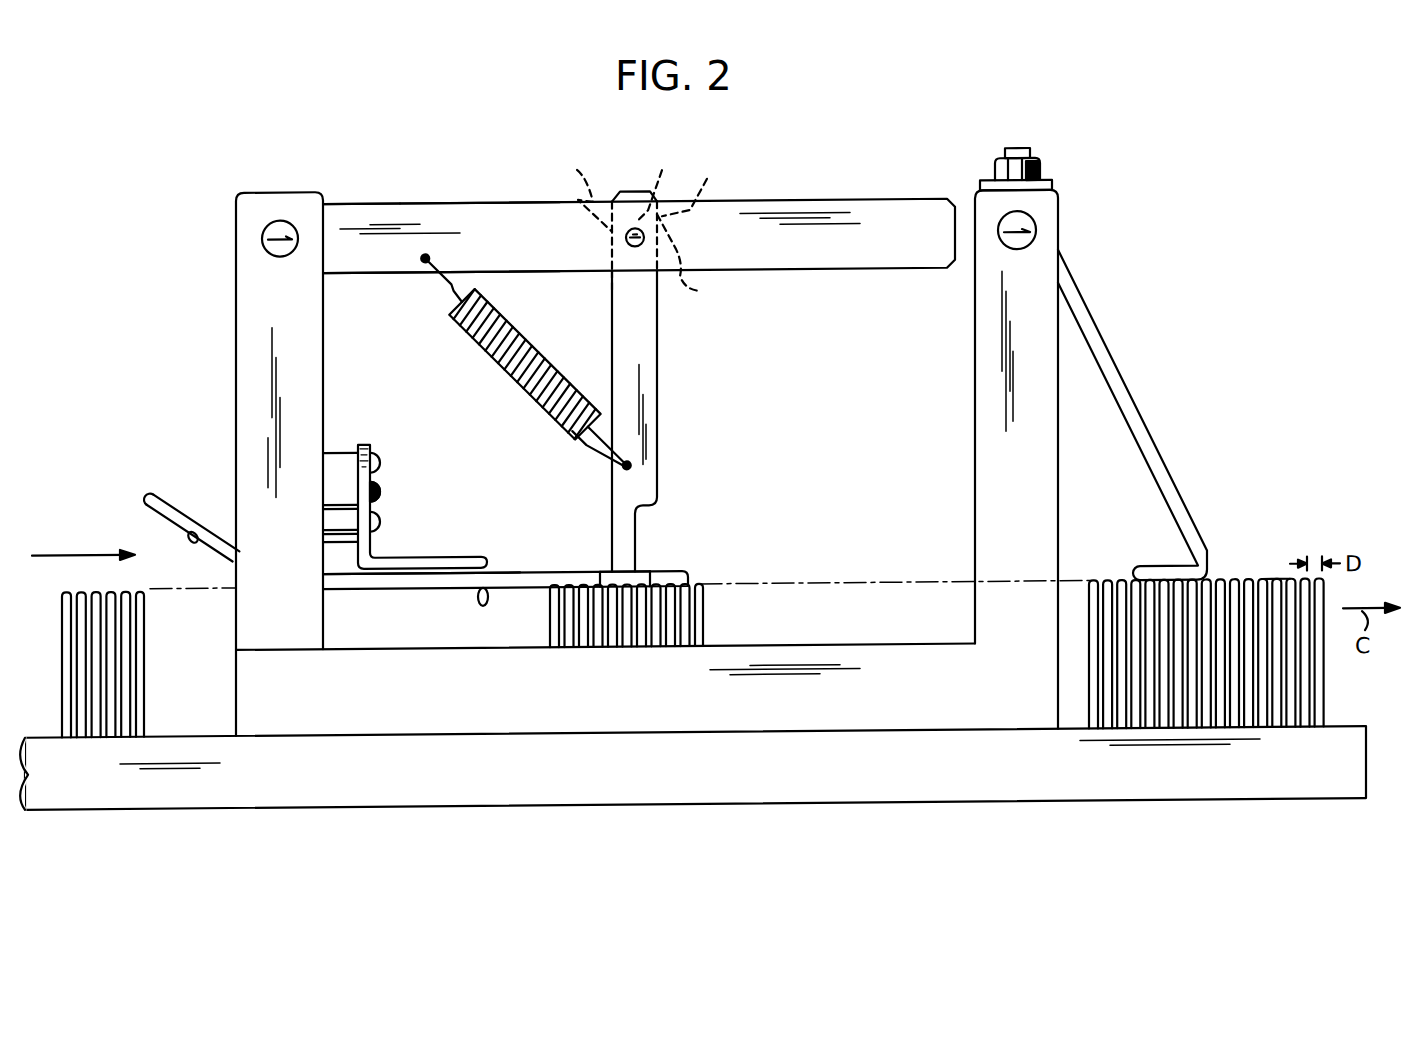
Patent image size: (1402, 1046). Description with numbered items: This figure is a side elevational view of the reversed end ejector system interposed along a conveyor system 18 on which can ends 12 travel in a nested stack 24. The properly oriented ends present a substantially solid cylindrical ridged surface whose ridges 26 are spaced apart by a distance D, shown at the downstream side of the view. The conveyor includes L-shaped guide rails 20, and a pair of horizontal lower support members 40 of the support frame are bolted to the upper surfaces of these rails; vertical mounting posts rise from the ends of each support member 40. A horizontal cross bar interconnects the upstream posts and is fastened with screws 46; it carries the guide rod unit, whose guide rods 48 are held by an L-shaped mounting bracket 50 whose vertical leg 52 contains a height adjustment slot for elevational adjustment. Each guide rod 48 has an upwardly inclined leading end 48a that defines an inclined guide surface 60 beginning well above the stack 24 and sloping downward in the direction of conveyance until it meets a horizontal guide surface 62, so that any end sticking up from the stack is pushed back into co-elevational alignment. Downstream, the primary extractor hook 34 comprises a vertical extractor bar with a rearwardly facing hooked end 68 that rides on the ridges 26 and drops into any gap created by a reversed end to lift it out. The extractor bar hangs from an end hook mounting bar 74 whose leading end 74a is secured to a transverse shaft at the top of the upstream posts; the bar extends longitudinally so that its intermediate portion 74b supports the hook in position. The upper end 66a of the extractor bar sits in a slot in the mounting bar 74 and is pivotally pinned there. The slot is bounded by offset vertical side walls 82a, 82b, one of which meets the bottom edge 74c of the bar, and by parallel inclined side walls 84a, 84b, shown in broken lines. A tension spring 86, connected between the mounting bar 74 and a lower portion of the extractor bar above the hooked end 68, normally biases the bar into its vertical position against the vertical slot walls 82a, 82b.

The can ends 12 is at (1255, 589).
The conveyor system 18 is at (1185, 822).
The L-shaped guide rails 20 is at (870, 799).
The stack 24 is at (1305, 541).
The ridges 26 is at (1275, 589).
The primary extractor hook 34 is at (742, 329).
The lower support members 40 is at (905, 686).
The screws 46 is at (388, 494).
The guide rods 48 is at (562, 583).
The leading end 48a is at (175, 510).
The L-shaped mounting bracket 50 is at (428, 556).
The vertical leg 52 is at (370, 450).
The inclined guide surfaces 60 is at (672, 411).
The horizontal guide surfaces 62 is at (489, 592).
The upper end 66a is at (661, 183).
The hooked end 68 is at (650, 576).
The end hook mounting bar 74 is at (905, 221).
The leading end 74a is at (348, 220).
The intermediate portion 74b is at (467, 209).
The bottom edge 74c is at (537, 280).
The vertical slot side wall 82a is at (612, 288).
The vertical slot side wall 82b is at (706, 191).
The inclined slot side wall 84a is at (578, 191).
The inclined slot side wall 84b is at (701, 259).
The tension spring 86 is at (473, 351).